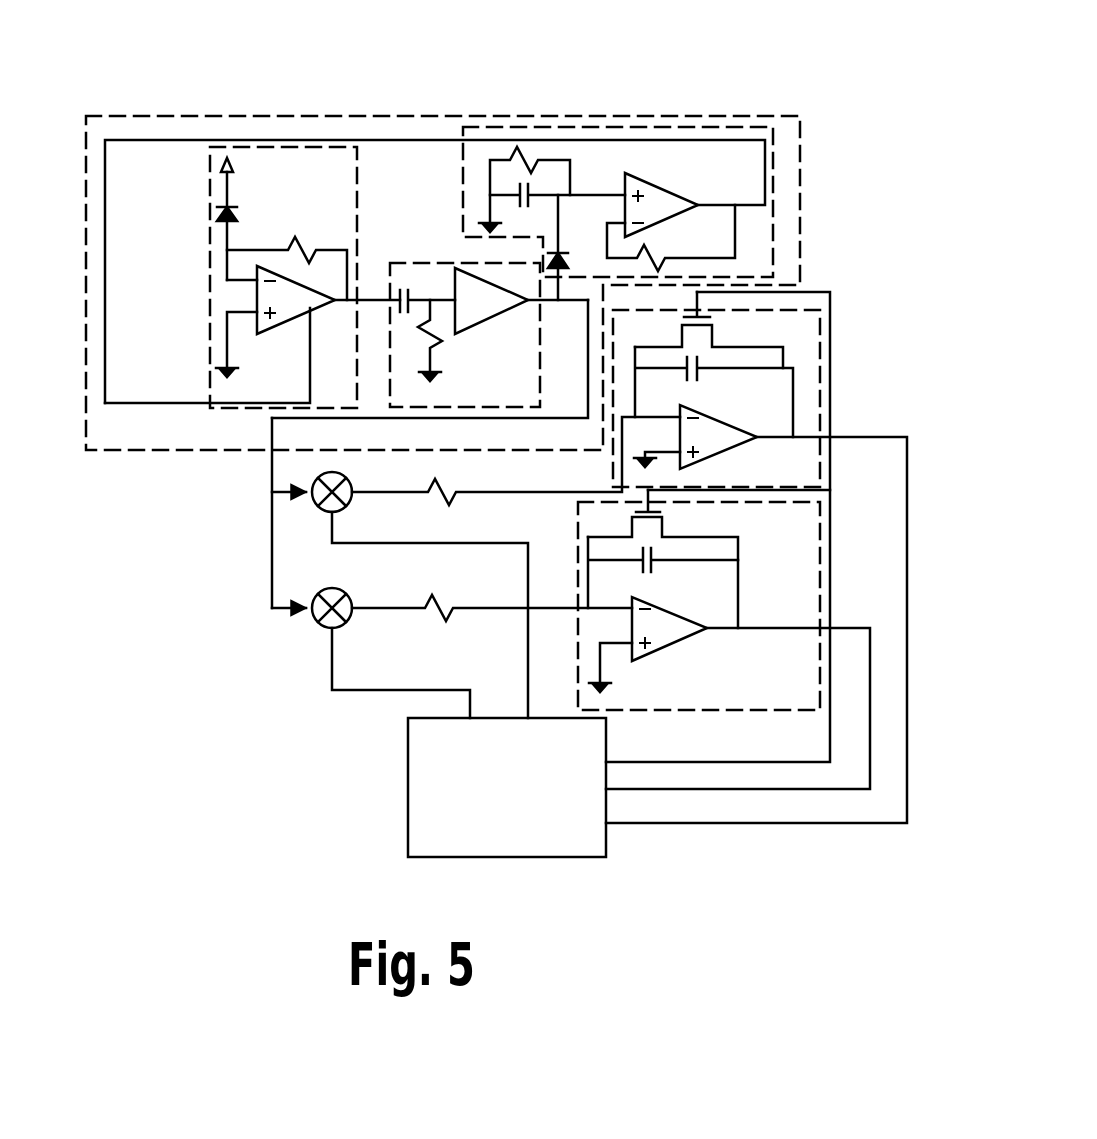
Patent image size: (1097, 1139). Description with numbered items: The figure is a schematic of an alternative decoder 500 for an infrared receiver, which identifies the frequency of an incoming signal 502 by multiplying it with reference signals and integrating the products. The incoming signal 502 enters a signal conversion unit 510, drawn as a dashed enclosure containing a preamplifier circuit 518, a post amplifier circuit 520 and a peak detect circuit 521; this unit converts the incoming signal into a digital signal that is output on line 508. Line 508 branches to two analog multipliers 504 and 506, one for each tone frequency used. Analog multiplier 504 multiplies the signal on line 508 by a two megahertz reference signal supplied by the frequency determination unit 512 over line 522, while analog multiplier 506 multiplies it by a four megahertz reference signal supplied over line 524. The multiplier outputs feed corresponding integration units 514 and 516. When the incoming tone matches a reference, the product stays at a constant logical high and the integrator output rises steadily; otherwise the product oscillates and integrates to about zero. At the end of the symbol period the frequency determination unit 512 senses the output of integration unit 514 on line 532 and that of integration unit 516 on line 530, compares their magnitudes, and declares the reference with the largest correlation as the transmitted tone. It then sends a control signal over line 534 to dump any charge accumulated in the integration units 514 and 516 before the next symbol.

The decoder 500 is at (536, 82).
The incoming signal 502 is at (196, 218).
The analog multiplier 504 is at (348, 477).
The analog multiplier 506 is at (346, 591).
The line 508 is at (272, 562).
The signal conversion unit 510 is at (86, 438).
The frequency determination unit 512 is at (522, 846).
The integration unit 514 is at (820, 317).
The integration unit 516 is at (820, 598).
The preamplifier circuit 518 is at (285, 277).
The post amplifier circuit 520 is at (392, 263).
The peak detect circuit 521 is at (463, 170).
The line 522 is at (492, 541).
The line 524 is at (470, 690).
The line 530 is at (854, 778).
The line 532 is at (862, 823).
The line 534 is at (716, 762).